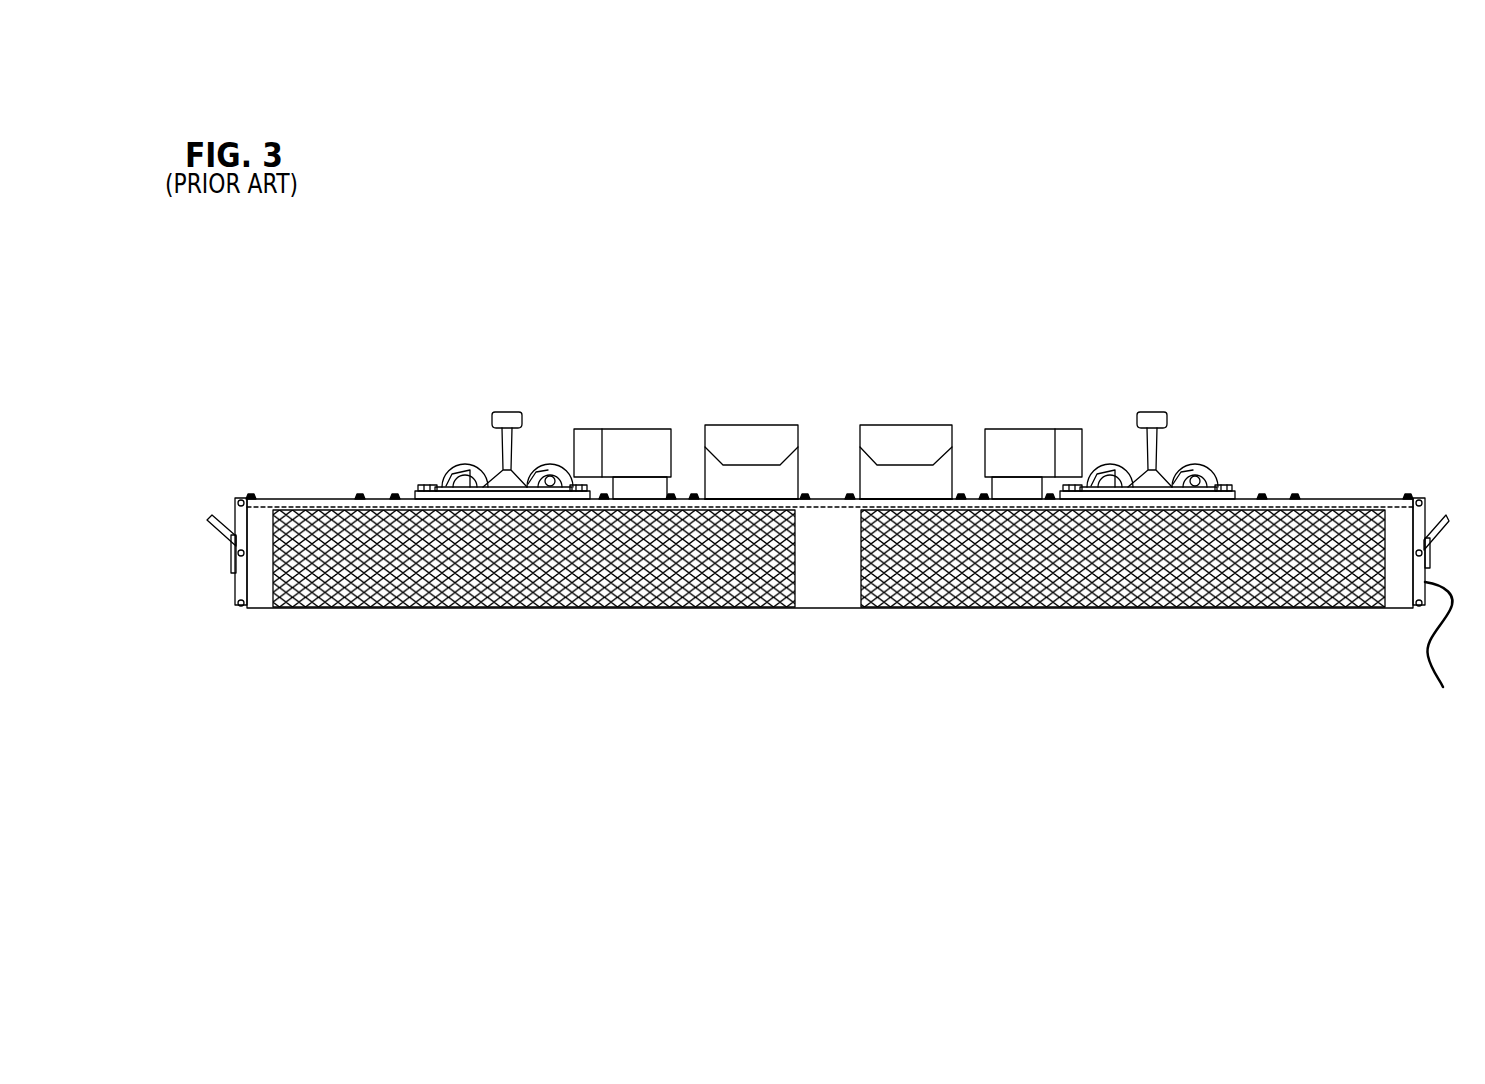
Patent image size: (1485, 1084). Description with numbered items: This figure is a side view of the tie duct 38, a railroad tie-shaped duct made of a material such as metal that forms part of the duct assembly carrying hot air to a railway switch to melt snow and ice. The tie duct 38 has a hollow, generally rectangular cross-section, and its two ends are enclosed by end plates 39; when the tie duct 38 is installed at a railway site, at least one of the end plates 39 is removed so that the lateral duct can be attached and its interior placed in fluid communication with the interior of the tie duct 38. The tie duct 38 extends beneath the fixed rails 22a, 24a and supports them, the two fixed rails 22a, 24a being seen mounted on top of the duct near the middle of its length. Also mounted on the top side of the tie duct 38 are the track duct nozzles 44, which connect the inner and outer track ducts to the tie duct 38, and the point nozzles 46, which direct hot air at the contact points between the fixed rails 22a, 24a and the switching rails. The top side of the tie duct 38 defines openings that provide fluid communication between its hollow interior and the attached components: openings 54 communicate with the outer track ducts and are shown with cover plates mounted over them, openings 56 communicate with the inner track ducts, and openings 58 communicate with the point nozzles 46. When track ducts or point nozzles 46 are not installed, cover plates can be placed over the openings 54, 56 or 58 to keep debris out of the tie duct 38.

The fixed rail 22a is at (505, 412).
The fixed rail 24a is at (1147, 412).
The tie duct 38 is at (492, 611).
The end plate 39 is at (237, 587).
The track duct nozzle 44 is at (748, 426).
The point nozzle 46 is at (633, 428).
The opening 54 is at (305, 502).
The opening 56 is at (637, 503).
The opening 58 is at (747, 503).